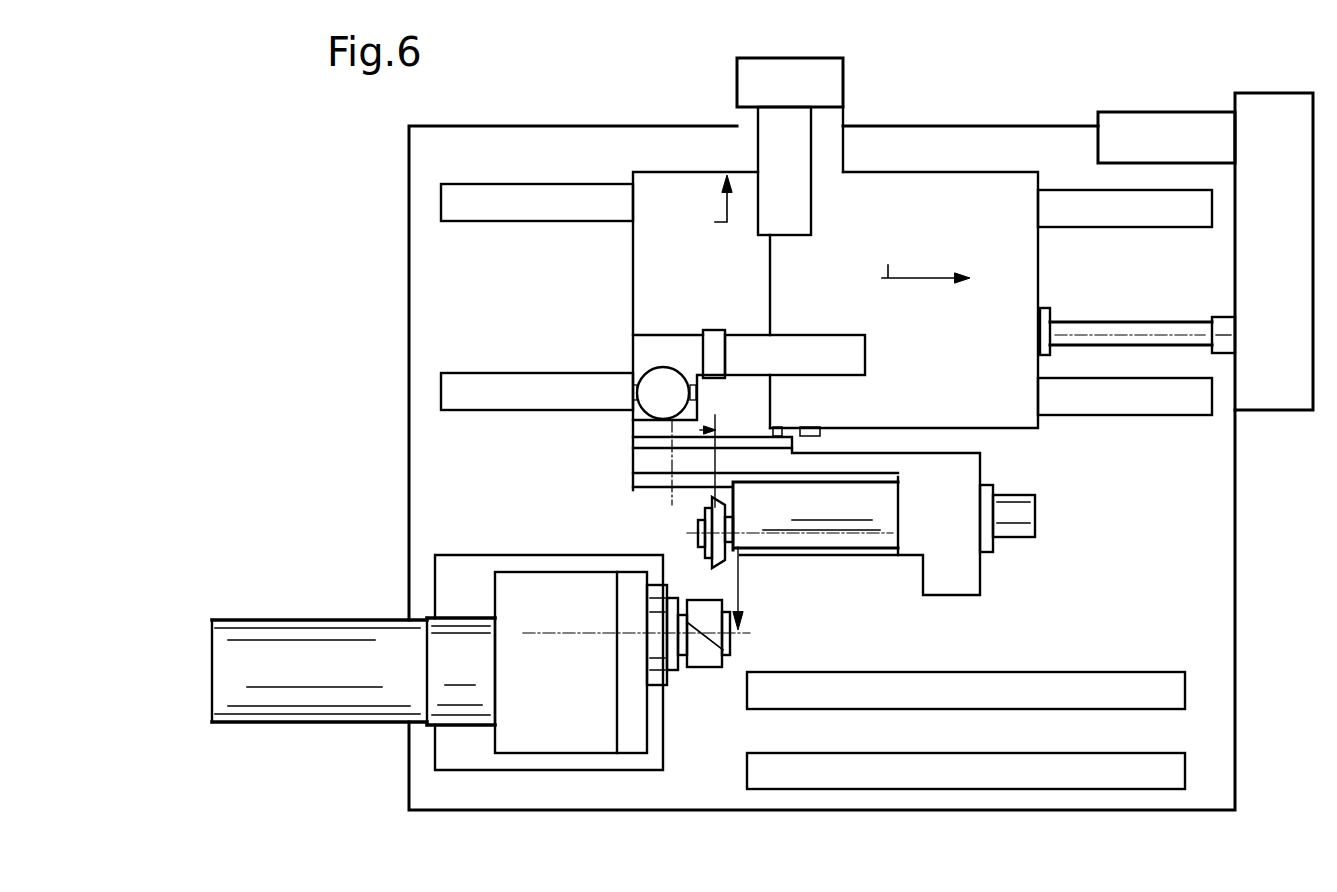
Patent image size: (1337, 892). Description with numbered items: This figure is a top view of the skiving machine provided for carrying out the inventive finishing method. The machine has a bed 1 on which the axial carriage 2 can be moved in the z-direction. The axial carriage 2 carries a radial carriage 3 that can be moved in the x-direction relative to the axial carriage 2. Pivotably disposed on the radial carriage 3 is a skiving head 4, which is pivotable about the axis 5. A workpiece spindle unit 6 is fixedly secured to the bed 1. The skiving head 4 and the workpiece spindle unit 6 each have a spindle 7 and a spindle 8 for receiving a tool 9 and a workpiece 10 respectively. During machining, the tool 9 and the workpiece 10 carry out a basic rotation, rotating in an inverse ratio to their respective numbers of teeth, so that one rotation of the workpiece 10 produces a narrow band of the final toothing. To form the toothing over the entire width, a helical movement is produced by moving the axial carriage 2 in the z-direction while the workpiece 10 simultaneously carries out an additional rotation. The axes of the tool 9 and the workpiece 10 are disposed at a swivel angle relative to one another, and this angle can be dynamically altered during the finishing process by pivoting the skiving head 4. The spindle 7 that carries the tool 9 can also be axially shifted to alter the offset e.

The bed 1 is at (1217, 553).
The axial carriage 2 is at (981, 187).
The radial carriage 3 is at (650, 220).
The skiving head 4 is at (963, 468).
The axis 5 is at (670, 498).
The workpiece spindle unit 6 is at (495, 595).
The spindle 7 is at (857, 533).
The spindle 8 is at (547, 633).
The tool 9 is at (718, 560).
The workpiece 10 is at (703, 657).